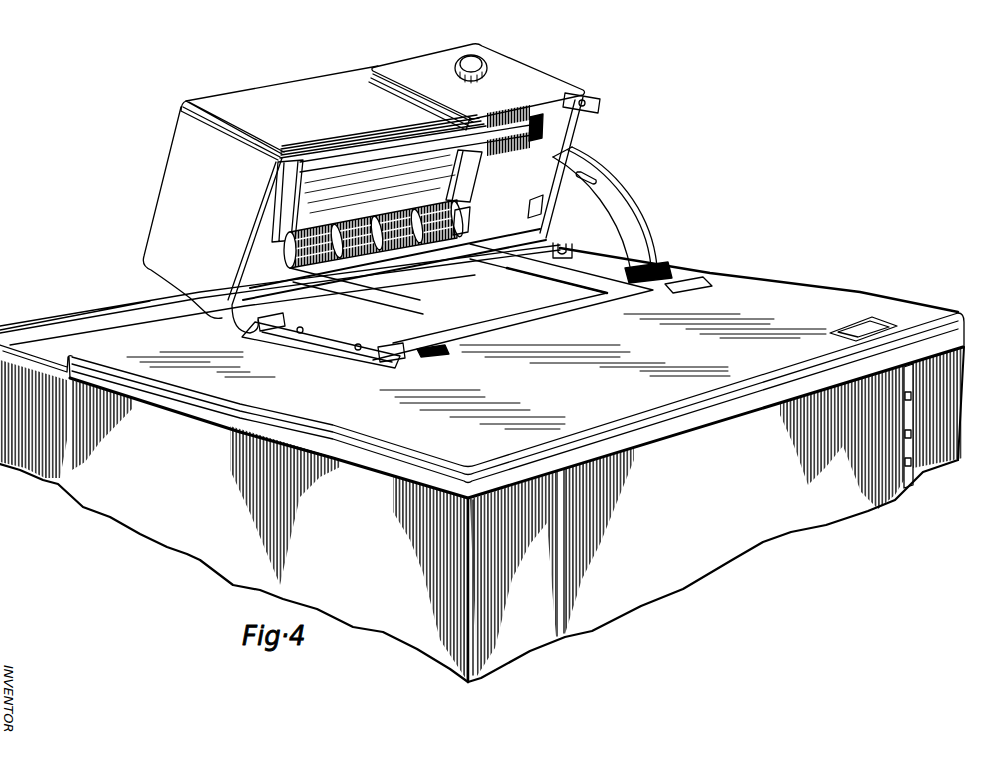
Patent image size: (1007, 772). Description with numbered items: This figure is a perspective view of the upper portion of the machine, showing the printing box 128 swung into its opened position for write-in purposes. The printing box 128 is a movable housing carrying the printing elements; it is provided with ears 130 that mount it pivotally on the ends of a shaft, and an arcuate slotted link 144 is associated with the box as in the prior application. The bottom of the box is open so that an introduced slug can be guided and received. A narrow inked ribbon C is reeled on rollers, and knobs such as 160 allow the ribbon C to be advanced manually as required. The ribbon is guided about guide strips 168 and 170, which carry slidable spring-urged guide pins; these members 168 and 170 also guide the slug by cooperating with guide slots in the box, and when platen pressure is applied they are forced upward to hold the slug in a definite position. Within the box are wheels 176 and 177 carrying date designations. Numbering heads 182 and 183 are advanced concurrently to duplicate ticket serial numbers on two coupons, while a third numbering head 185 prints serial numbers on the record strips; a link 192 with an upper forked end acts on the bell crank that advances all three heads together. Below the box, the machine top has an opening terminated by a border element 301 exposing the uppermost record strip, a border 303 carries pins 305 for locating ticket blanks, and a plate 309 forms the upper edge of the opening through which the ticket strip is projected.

The printing box 128 is at (190, 180).
The ears 130 is at (203, 313).
The arcuate slotted link 144 is at (632, 210).
The knobs 160 is at (457, 58).
The guide strip 168 is at (463, 172).
The guide strip 170 is at (293, 200).
The wheel 176 is at (375, 225).
The wheel 177 is at (383, 297).
The numbering head 182 is at (425, 286).
The numbering head 183 is at (458, 218).
The third numbering head 185 is at (508, 150).
The link 192 is at (563, 244).
The border element 301 is at (490, 280).
The border 303 is at (328, 336).
The pins 305 is at (303, 350).
The plate 309 is at (243, 334).
The inked ribbon C is at (363, 166).